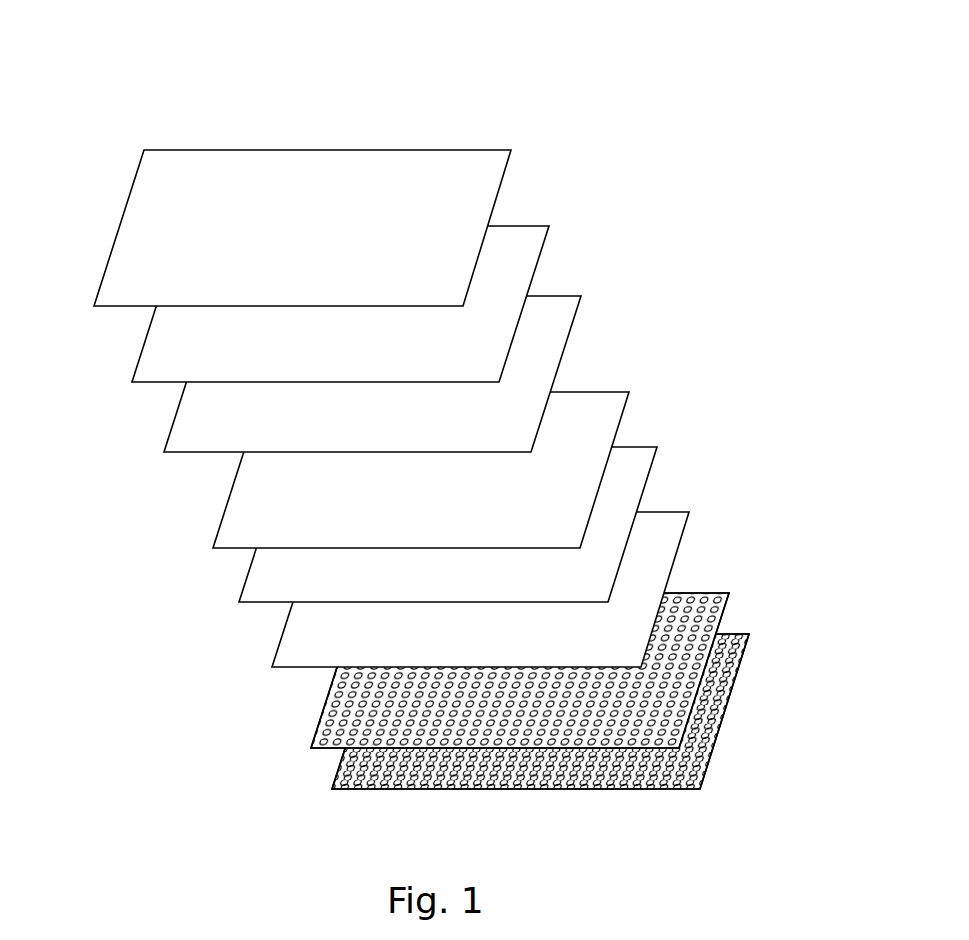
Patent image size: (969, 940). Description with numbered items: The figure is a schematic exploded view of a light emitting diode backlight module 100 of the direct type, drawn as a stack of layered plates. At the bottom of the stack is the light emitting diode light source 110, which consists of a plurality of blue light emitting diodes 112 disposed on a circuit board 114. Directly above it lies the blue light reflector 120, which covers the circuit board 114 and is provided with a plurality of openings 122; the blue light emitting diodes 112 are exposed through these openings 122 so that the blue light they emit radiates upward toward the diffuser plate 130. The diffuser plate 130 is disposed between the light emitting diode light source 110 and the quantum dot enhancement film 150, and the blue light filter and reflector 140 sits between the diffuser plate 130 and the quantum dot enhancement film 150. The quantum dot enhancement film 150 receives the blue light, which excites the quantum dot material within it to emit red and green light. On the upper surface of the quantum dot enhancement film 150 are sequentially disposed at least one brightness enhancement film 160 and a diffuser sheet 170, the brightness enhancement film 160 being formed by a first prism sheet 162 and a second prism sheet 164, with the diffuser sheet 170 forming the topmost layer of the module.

The light emitting diode backlight module 100 is at (61, 84).
The light emitting diode light source 110 is at (611, 710).
The blue light emitting diodes 112 is at (715, 702).
The circuit board 114 is at (715, 730).
The blue light reflector 120 is at (589, 649).
The openings 122 is at (690, 600).
The diffuser plate 130 is at (667, 535).
The blue light filter and reflector 140 is at (635, 469).
The quantum dot enhancement film 150 is at (608, 415).
The brightness enhancement film 160 is at (463, 337).
The first prism sheet 162 is at (561, 318).
The second prism sheet 164 is at (527, 248).
The diffuser sheet 170 is at (488, 173).